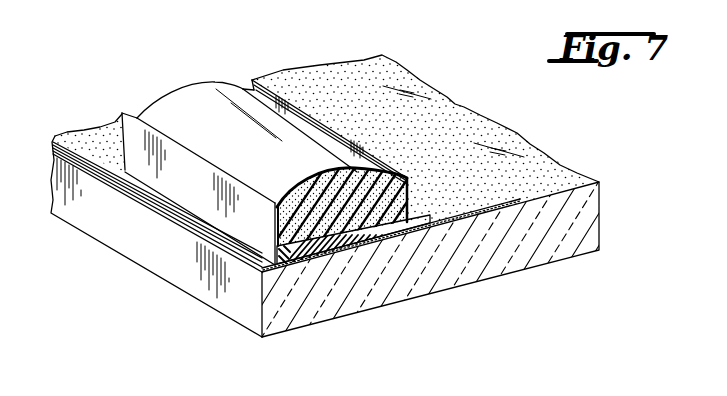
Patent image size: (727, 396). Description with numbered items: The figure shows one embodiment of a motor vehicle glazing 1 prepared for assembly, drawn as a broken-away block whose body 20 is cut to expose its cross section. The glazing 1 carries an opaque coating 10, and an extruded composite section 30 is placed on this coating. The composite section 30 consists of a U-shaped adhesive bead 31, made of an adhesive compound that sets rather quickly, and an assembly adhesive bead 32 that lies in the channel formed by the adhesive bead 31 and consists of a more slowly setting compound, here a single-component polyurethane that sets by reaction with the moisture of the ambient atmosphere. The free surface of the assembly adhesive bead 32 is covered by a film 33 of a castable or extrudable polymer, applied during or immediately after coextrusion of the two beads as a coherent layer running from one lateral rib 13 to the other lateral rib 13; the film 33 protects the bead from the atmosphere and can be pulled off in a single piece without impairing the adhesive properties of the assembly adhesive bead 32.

The glazing 1 is at (541, 248).
The opaque coating 10 is at (325, 100).
The lateral rib 13 is at (134, 136).
The block body 20 is at (157, 250).
The extruded composite section 30 is at (178, 78).
The U-shaped adhesive bead 31 is at (312, 254).
The assembly adhesive bead 32 is at (360, 244).
The film 33 is at (364, 157).